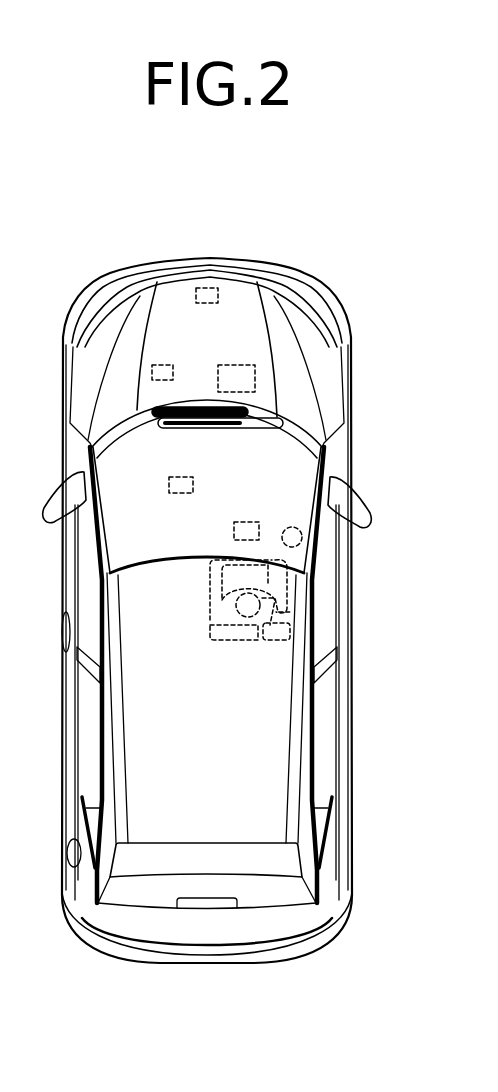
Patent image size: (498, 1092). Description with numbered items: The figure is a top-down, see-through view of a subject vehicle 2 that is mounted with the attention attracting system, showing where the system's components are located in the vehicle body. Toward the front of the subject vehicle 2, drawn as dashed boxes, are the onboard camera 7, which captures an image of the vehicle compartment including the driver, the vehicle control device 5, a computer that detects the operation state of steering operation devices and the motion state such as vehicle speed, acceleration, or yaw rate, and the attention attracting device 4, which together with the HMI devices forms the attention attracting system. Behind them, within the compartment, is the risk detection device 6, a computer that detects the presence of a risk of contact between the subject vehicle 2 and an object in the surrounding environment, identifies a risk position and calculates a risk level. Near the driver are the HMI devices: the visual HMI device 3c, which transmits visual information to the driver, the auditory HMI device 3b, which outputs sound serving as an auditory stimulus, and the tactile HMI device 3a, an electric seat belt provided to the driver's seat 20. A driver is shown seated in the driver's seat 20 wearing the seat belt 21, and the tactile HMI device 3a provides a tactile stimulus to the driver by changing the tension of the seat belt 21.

The subject vehicle 2 is at (290, 273).
The tactile HMI device 3a is at (272, 642).
The auditory HMI device 3b is at (292, 527).
The visual HMI device 3c is at (250, 522).
The attention attracting device 4 is at (238, 366).
The vehicle control device 5 is at (163, 365).
The risk detection device 6 is at (182, 475).
The onboard camera 7 is at (200, 304).
The driver's seat 20 is at (235, 641).
The seat belt 21 is at (290, 613).